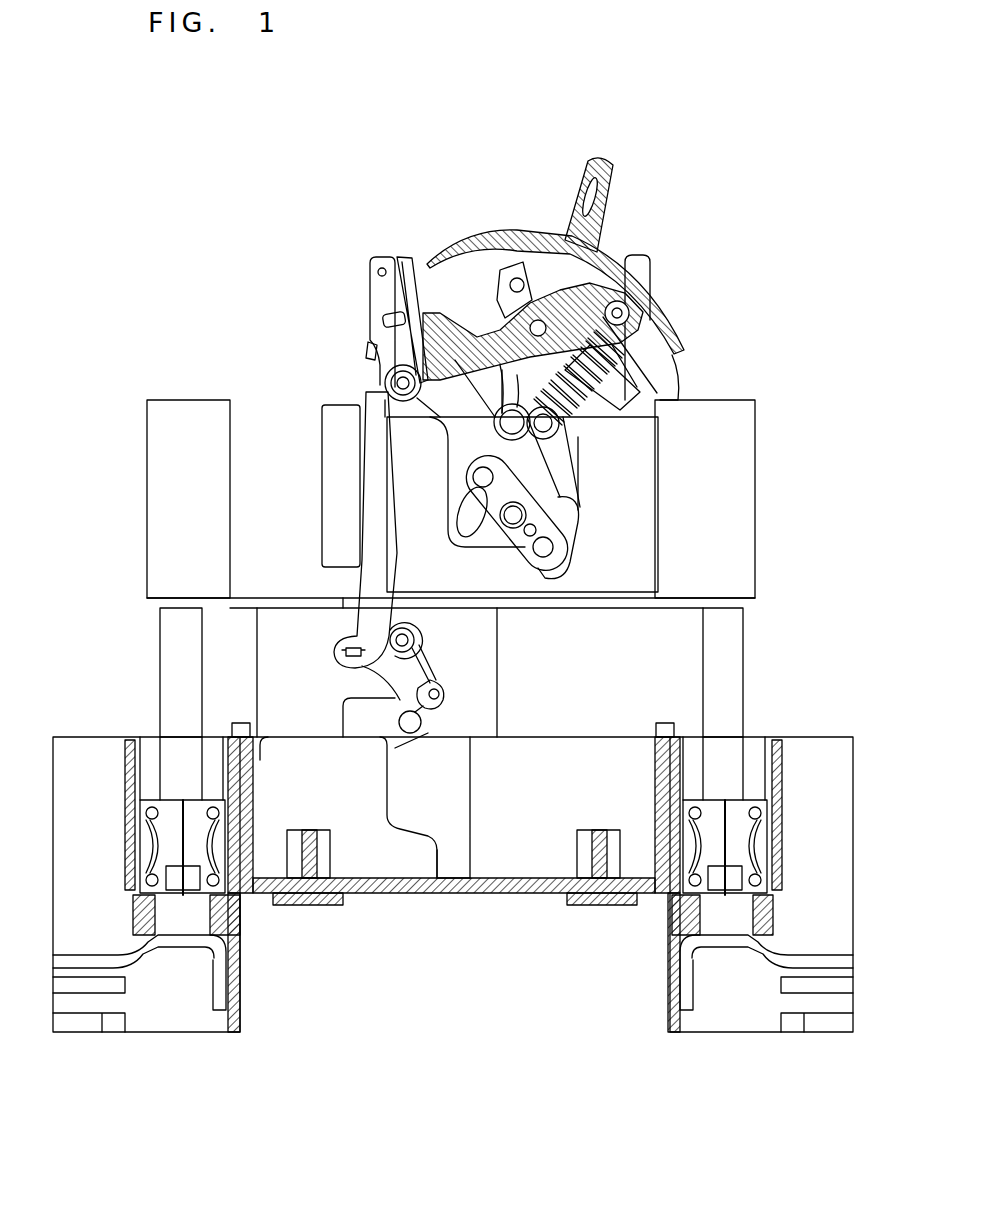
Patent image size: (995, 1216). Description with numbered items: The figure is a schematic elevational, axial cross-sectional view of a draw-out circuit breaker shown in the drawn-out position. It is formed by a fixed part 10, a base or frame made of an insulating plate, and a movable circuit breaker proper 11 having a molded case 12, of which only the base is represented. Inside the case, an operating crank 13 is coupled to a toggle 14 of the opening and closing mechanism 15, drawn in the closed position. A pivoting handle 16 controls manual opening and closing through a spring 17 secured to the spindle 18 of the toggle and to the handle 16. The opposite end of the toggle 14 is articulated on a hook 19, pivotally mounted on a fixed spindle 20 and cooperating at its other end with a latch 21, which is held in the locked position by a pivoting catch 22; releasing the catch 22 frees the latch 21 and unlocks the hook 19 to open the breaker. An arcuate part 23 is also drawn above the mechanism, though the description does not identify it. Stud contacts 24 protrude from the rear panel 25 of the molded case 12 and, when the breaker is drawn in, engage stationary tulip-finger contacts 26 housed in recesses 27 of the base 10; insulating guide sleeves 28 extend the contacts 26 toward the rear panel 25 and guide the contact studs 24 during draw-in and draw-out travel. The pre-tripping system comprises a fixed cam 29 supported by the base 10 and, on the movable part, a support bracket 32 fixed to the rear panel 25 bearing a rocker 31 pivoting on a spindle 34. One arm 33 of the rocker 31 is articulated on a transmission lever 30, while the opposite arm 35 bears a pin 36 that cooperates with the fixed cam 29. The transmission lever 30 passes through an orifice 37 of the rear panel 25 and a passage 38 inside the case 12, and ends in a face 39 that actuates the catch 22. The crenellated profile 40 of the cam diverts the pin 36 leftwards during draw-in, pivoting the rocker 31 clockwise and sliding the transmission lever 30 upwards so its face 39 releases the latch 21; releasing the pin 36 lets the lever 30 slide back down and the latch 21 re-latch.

The fixed part 10 is at (228, 990).
The movable circuit breaker 11 is at (150, 350).
The molded case 12 is at (725, 422).
The operating crank 13 is at (520, 490).
The toggle 14 is at (560, 458).
The opening and closing mechanism 15 is at (470, 213).
The pivoting handle 16 is at (615, 165).
The spring 17 is at (585, 297).
The spindle 18 is at (548, 432).
The hook 19 is at (522, 276).
The fixed spindle 20 is at (633, 305).
The latch 21 is at (392, 258).
The pivoting catch 22 is at (375, 287).
The cap 23 is at (462, 237).
The stud contacts 24 is at (172, 660).
The rear panel 25 is at (612, 602).
The tulip-finger contact 26 is at (762, 842).
The recesses 27 is at (763, 763).
The insulating guide sleeves 28 is at (158, 763).
The fixed cam 29 is at (437, 836).
The transmission lever 30 is at (372, 398).
The rocker 31 is at (432, 676).
The support bracket 32 is at (490, 630).
The arm 33 is at (355, 665).
The spindle 34 is at (415, 645).
The arm 35 is at (398, 683).
The pin 36 is at (422, 720).
The orifice 37 is at (357, 600).
The passage 38 is at (360, 470).
The face 39 is at (370, 362).
The profile 40 is at (390, 772).